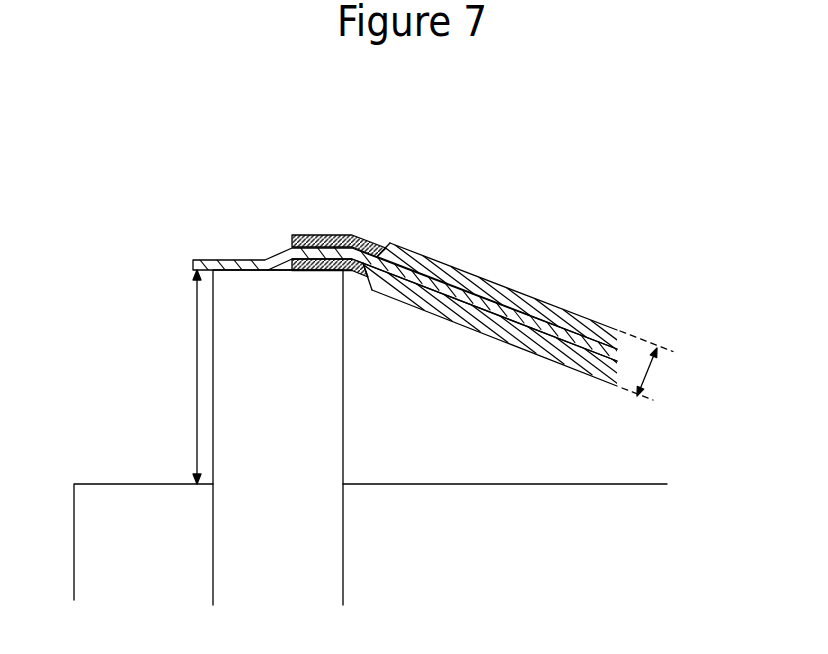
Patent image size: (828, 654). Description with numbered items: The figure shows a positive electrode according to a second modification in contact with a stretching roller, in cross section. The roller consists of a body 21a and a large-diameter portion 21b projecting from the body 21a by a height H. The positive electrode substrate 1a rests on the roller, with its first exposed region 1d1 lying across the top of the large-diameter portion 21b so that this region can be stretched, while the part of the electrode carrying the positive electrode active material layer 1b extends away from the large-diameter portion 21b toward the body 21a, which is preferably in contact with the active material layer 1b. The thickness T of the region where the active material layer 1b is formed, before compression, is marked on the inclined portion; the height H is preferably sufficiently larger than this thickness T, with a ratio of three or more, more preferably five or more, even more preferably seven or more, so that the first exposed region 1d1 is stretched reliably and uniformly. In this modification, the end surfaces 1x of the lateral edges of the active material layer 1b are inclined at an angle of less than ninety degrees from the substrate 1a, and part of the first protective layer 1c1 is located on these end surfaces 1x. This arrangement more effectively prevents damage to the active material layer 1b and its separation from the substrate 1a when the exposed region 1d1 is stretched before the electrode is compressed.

The positive electrode substrate 1a is at (468, 293).
The positive electrode active material layer 1b is at (578, 332).
The first protective layer 1c1 is at (343, 242).
The first exposed region 1d1 is at (228, 262).
The end surfaces 1x is at (387, 245).
The body 21a is at (523, 543).
The large-diameter portion 21b is at (265, 338).
The height H is at (187, 377).
The thickness T is at (647, 365).